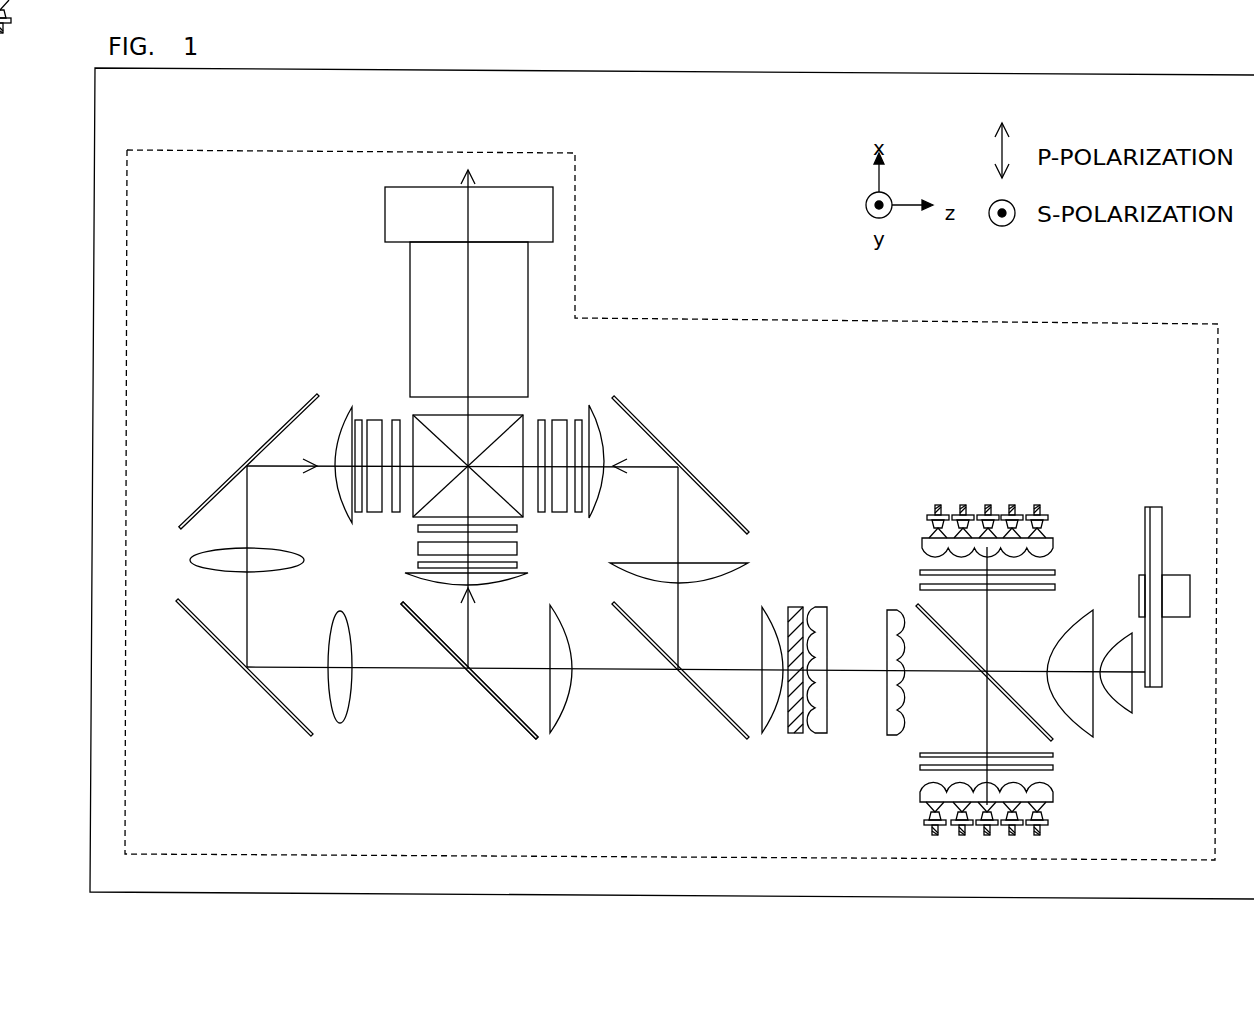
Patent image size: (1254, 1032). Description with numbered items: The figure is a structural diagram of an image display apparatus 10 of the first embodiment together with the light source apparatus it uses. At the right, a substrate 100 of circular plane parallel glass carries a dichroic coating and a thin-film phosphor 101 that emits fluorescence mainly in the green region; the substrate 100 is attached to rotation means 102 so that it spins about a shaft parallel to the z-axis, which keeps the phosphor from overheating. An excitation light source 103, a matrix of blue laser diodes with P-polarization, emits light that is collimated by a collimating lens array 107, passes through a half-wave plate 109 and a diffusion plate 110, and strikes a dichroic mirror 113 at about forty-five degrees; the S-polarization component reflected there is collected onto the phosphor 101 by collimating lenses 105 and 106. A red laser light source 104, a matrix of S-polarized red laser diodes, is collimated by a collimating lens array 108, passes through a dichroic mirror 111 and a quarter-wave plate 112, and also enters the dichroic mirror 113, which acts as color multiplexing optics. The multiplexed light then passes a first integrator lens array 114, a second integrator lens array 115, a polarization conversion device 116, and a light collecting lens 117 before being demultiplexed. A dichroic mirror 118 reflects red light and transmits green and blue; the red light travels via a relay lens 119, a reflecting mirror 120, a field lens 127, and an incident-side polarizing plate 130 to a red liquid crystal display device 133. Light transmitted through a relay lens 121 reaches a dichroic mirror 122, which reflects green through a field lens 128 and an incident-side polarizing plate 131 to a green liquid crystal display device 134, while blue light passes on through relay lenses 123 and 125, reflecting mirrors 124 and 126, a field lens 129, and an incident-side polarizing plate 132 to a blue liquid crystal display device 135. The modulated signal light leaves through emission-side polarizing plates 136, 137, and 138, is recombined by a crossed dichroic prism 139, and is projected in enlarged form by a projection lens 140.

The image display apparatus 10 is at (752, 320).
The substrate 100 is at (1155, 688).
The phosphor 101 is at (1145, 503).
The rotation means 102 is at (1172, 577).
The excitation light source 103 is at (985, 505).
The red laser light source 104 is at (928, 827).
The collimating lens 105 is at (1120, 608).
The collimating lens 106 is at (1083, 607).
The collimating lens array 107 is at (925, 538).
The collimating lens array 108 is at (1050, 803).
The half-wave plate 109 is at (919, 570).
The diffusion plate 110 is at (919, 585).
The dichroic mirror 111 is at (1053, 768).
The quarter-wave plate 112 is at (1053, 755).
The dichroic mirror 113 is at (918, 608).
The first integrator lens array 114 is at (898, 733).
The second integrator lens array 115 is at (818, 727).
The polarization conversion device 116 is at (792, 730).
The light collecting lens 117 is at (768, 727).
The dichroic mirror 118 is at (716, 708).
The relay lens 119 is at (677, 580).
The reflecting mirror 120 is at (652, 436).
The relay lens 121 is at (555, 735).
The dichroic mirror 122 is at (493, 695).
The relay lens 123 is at (345, 698).
The reflecting mirror 124 is at (275, 700).
The relay lens 125 is at (193, 556).
The reflecting mirror 126 is at (232, 478).
The field lens 127 is at (602, 417).
The field lens 128 is at (445, 646).
The field lens 129 is at (340, 424).
The incident-side polarizing plate 130 is at (580, 418).
The incident-side polarizing plate 131 is at (518, 565).
The incident-side polarizing plate 132 is at (355, 418).
The red liquid crystal display device 133 is at (565, 418).
The green liquid crystal display device 134 is at (518, 548).
The blue liquid crystal display device 135 is at (369, 418).
The emission-side polarizing plate 136 is at (541, 418).
The emission-side polarizing plate 137 is at (417, 528).
The emission-side polarizing plate 138 is at (396, 418).
The crossed dichroic prism 139 is at (415, 516).
The projection lens 140 is at (553, 218).